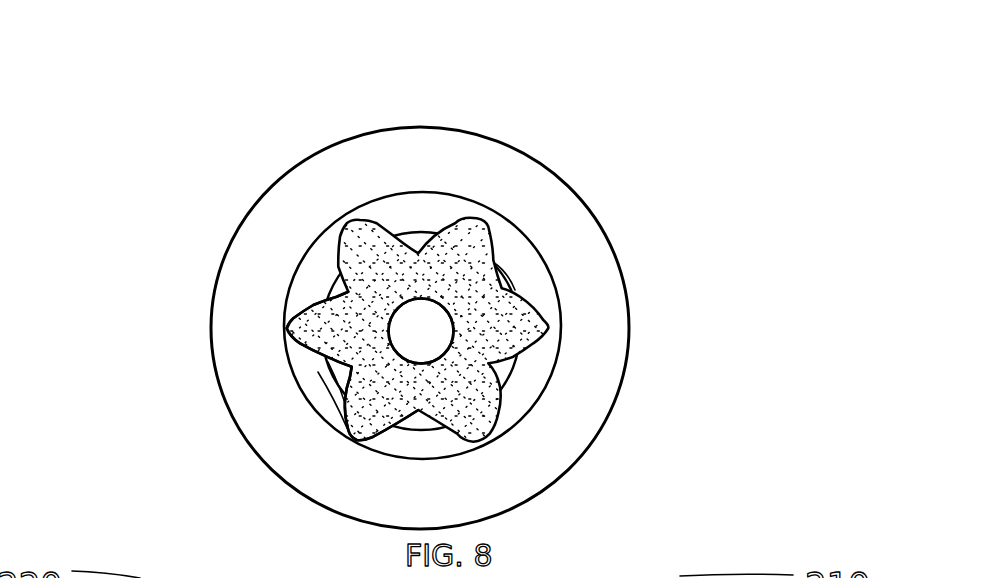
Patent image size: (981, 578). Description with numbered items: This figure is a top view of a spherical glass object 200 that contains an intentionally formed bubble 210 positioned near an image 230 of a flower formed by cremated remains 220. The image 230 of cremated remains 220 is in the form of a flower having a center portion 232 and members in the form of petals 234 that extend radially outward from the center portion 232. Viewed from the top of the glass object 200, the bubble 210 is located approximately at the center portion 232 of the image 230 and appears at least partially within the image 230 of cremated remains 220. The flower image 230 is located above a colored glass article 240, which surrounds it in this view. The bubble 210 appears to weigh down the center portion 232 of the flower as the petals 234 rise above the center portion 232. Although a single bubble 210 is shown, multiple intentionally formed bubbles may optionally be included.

The glass object 200 is at (488, 115).
The bubble 210 is at (453, 322).
The cremated remains 220 is at (370, 250).
The image 230 is at (548, 333).
The center portion 232 is at (418, 333).
The petals 234 is at (352, 438).
The colored glass article 240 is at (537, 380).